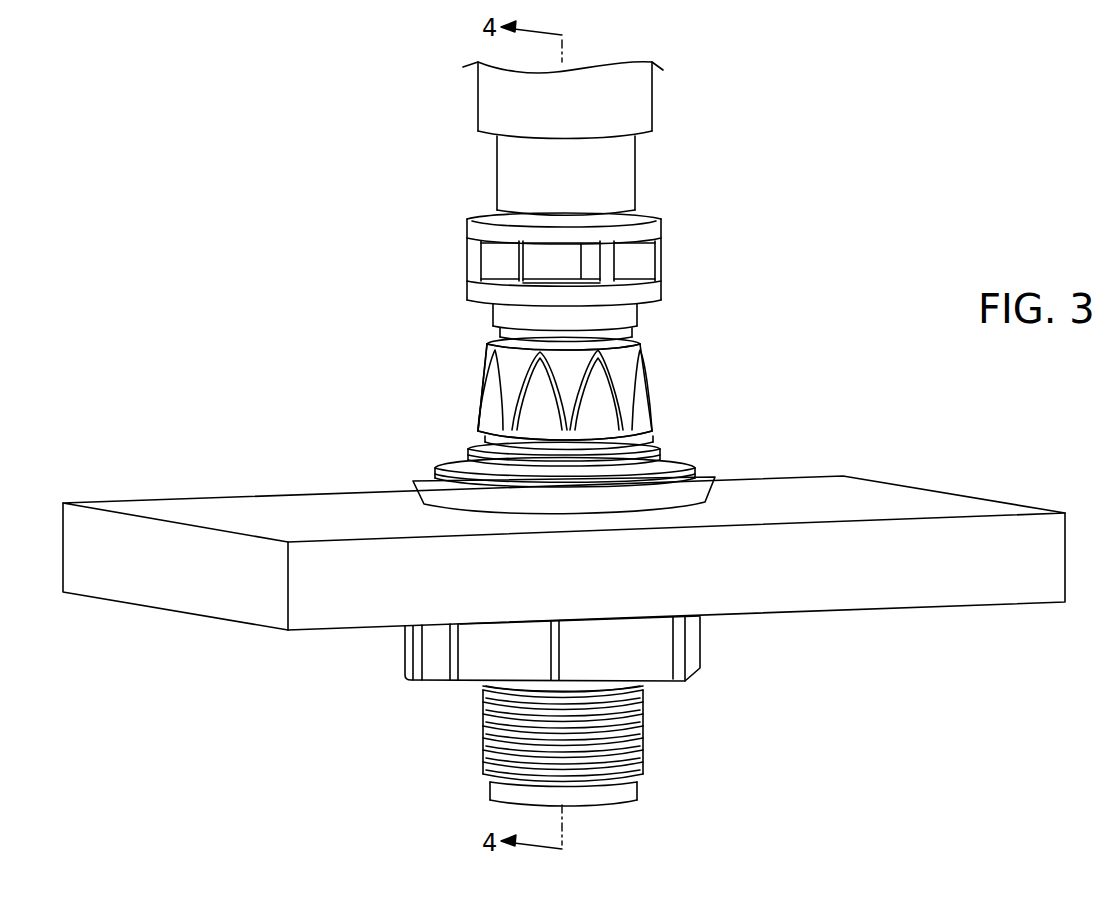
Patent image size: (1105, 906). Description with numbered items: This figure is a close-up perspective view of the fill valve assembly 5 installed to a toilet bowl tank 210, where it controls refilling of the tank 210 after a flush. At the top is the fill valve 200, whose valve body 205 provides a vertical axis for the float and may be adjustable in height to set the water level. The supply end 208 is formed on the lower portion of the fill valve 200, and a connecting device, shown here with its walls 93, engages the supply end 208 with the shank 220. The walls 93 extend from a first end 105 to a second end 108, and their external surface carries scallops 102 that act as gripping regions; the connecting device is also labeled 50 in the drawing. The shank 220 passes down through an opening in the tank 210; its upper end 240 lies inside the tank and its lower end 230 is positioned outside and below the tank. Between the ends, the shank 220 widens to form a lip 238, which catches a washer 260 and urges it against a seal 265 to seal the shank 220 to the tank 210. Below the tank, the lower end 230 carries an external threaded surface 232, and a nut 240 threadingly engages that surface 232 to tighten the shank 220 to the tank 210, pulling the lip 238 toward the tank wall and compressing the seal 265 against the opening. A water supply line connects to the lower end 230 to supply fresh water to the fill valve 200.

The fill valve assembly 5 is at (942, 213).
The fill valve 200 is at (662, 103).
The valve body 205 is at (653, 117).
The coupling nut 50 is at (534, 373).
The walls 93 is at (482, 389).
The second end 108 is at (487, 341).
The scallops 102 is at (483, 410).
The first end 105 is at (480, 431).
The supply end 208 is at (605, 405).
The lip 238 is at (655, 445).
The washer 260 is at (690, 458).
The seal 265 is at (713, 498).
The toilet bowl tank 210 is at (952, 595).
The nut 240 is at (703, 656).
The shank 220 is at (641, 700).
The external threaded surface 232 is at (641, 745).
The lower end 230 is at (622, 798).